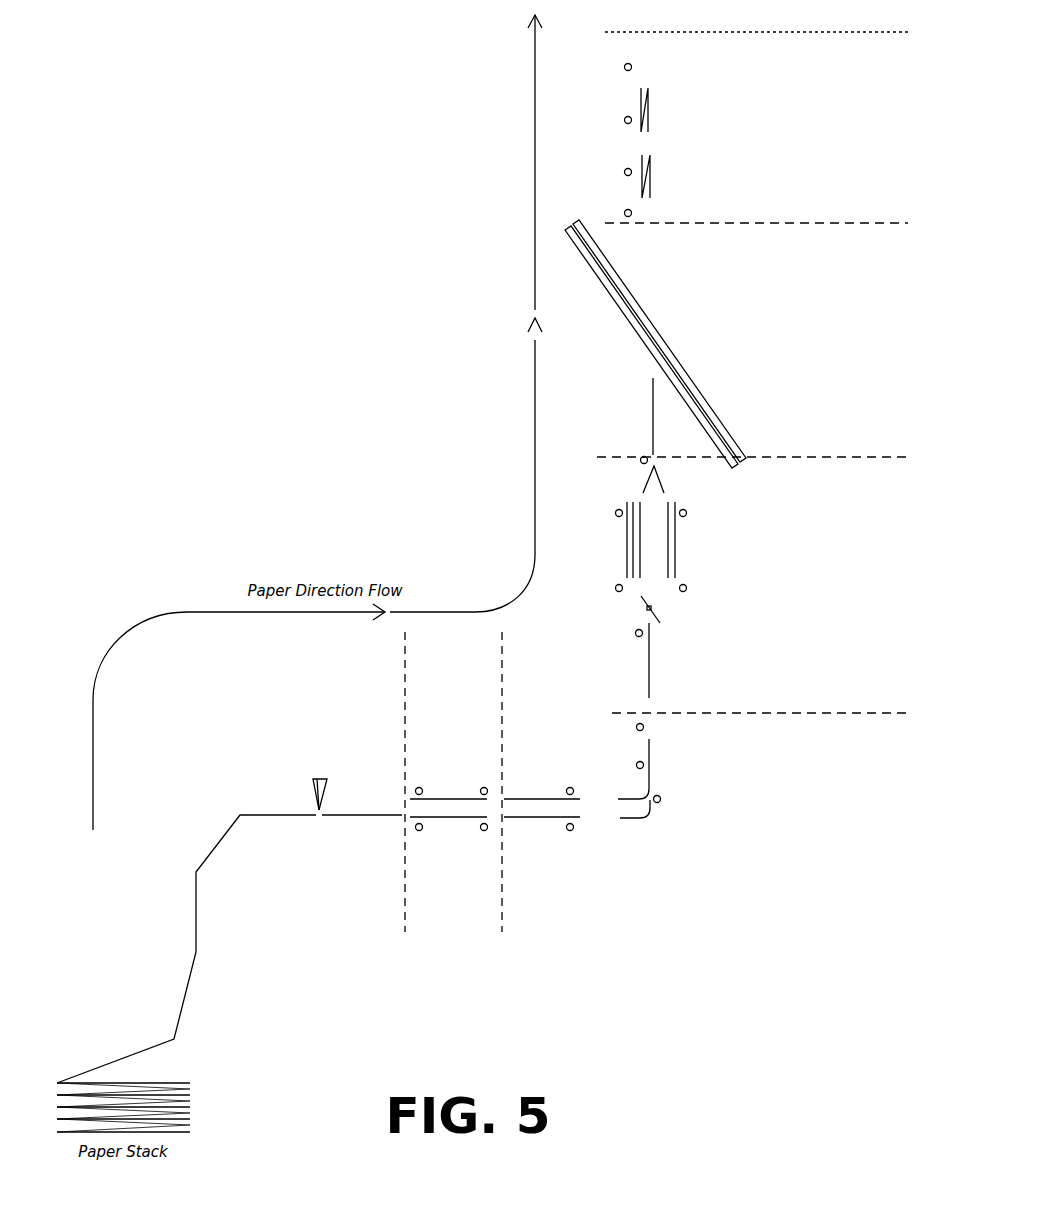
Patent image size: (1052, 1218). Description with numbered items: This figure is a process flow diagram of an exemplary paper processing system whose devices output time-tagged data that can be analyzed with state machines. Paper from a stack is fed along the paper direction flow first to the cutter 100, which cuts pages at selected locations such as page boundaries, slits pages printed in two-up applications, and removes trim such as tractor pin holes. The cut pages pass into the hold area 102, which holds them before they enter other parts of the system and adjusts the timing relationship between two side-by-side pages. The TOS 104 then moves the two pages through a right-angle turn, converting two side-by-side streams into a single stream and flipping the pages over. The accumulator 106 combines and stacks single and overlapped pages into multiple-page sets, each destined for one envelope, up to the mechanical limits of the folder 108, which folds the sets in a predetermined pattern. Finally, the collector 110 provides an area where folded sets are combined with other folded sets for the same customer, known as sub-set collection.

The cutter 100 is at (326, 879).
The hold area 102 is at (495, 884).
The TOS 104 is at (680, 852).
The accumulator 106 is at (736, 578).
The folder 108 is at (694, 344).
The collector 110 is at (730, 140).